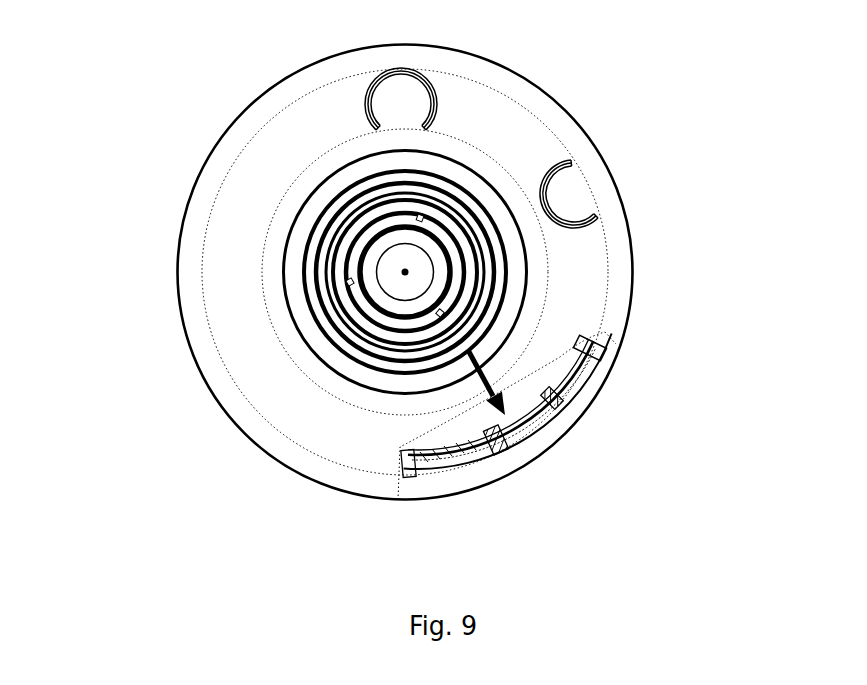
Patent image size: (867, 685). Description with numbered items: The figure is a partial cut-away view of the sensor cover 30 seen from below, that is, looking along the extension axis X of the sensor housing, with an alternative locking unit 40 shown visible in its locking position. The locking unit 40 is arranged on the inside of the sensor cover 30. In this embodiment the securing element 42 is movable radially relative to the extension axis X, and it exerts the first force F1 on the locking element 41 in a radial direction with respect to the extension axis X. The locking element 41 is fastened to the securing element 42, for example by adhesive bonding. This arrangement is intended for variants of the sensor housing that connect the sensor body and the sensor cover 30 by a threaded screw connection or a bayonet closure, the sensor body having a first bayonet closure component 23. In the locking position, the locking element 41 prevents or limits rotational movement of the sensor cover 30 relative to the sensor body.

The sensor cover 30 is at (258, 74).
The extension axis X is at (405, 272).
The first force F1 is at (495, 362).
The first bayonet closure component 23 is at (584, 366).
The securing element 42 is at (556, 405).
The locking element 41 is at (505, 455).
The locking unit 40 is at (495, 507).